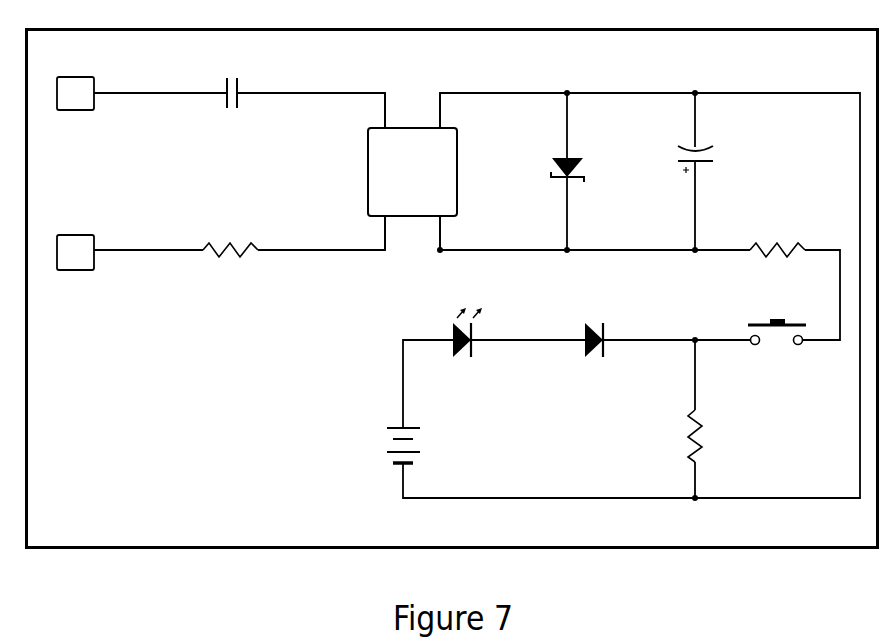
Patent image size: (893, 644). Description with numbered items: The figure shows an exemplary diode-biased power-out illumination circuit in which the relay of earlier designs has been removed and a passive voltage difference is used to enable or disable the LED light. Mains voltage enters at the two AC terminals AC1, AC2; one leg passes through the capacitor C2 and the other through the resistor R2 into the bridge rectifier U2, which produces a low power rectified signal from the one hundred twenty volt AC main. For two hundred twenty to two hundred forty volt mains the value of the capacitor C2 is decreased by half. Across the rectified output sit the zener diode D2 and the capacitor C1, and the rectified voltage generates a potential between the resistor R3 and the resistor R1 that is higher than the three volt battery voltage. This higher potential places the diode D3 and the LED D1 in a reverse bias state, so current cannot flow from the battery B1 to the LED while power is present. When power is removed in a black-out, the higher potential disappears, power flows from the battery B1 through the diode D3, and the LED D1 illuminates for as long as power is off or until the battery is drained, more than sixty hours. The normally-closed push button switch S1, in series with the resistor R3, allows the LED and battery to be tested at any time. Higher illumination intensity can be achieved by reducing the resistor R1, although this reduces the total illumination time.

The AC input terminal AC1 is at (78, 82).
The AC input terminal AC2 is at (78, 241).
The capacitor C2 is at (231, 81).
The bridge rectifier U2 is at (357, 172).
The resistor R2 is at (230, 242).
The zener diode D2 is at (601, 177).
The capacitor C1 is at (710, 148).
The resistor R3 is at (777, 241).
The LED D1 is at (451, 348).
The diode D3 is at (603, 346).
The battery B1 is at (459, 452).
The push button switch S1 is at (788, 339).
The resistor R1 is at (707, 434).